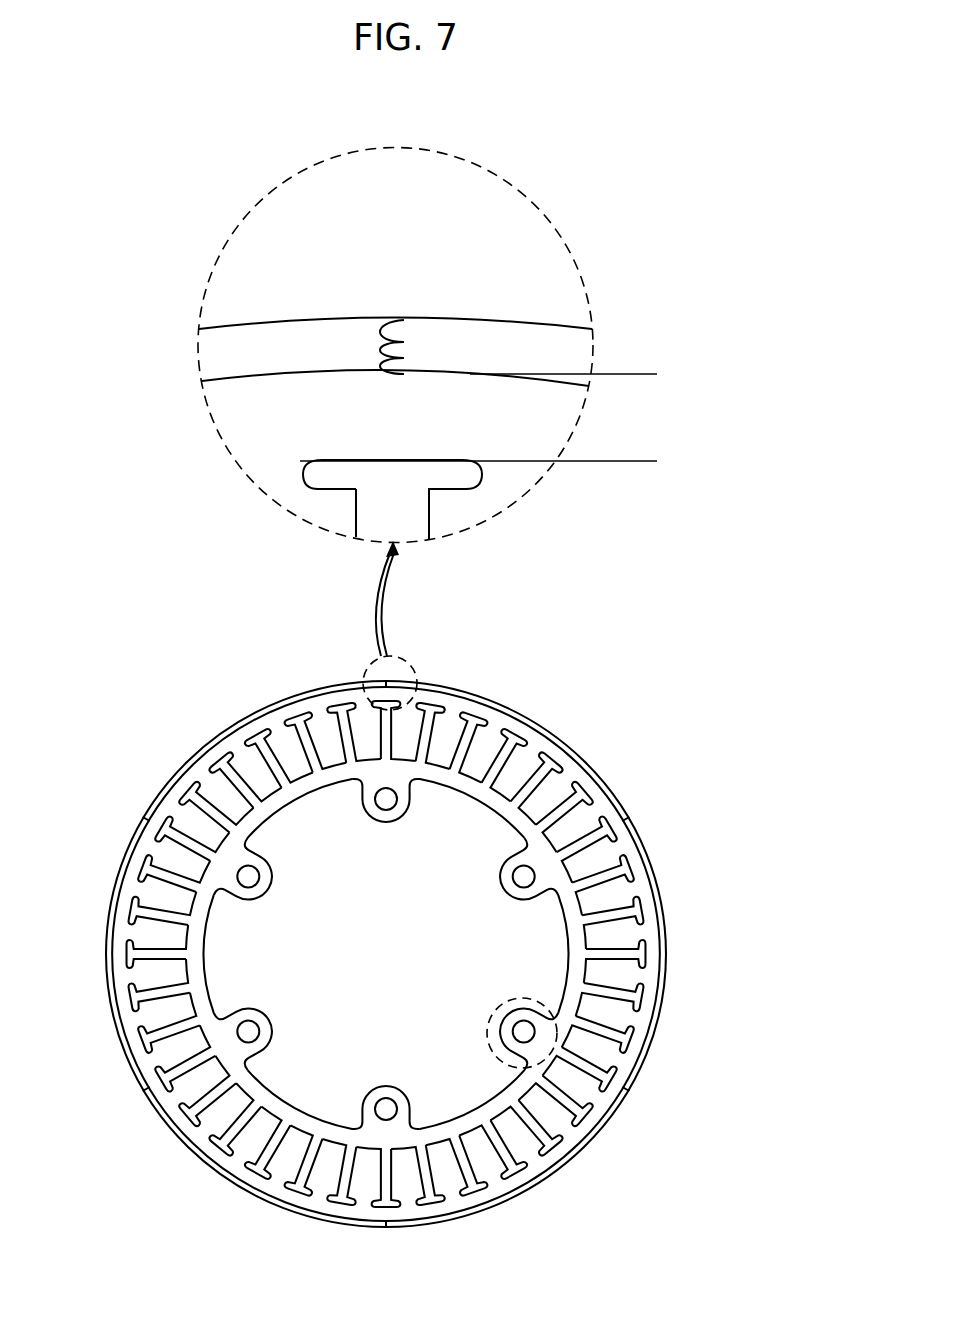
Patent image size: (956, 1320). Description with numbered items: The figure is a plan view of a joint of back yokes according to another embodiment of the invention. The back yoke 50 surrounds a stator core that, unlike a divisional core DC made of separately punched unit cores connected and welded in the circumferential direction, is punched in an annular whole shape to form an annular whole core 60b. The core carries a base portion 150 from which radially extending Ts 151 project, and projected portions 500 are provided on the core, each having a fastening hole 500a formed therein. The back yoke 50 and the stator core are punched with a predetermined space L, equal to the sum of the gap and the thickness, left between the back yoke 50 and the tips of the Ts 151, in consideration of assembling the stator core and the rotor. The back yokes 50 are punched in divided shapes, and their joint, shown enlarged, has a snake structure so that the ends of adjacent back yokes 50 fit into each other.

The back yoke 50 is at (175, 780).
The T 151 is at (156, 905).
The base portion 150 is at (205, 968).
The fastening hole 500a is at (523, 882).
The projected portion 500 is at (487, 1028).
The annular whole core 60b is at (288, 812).
The divisional core DC is at (274, 1084).
The predetermined space L is at (627, 345).